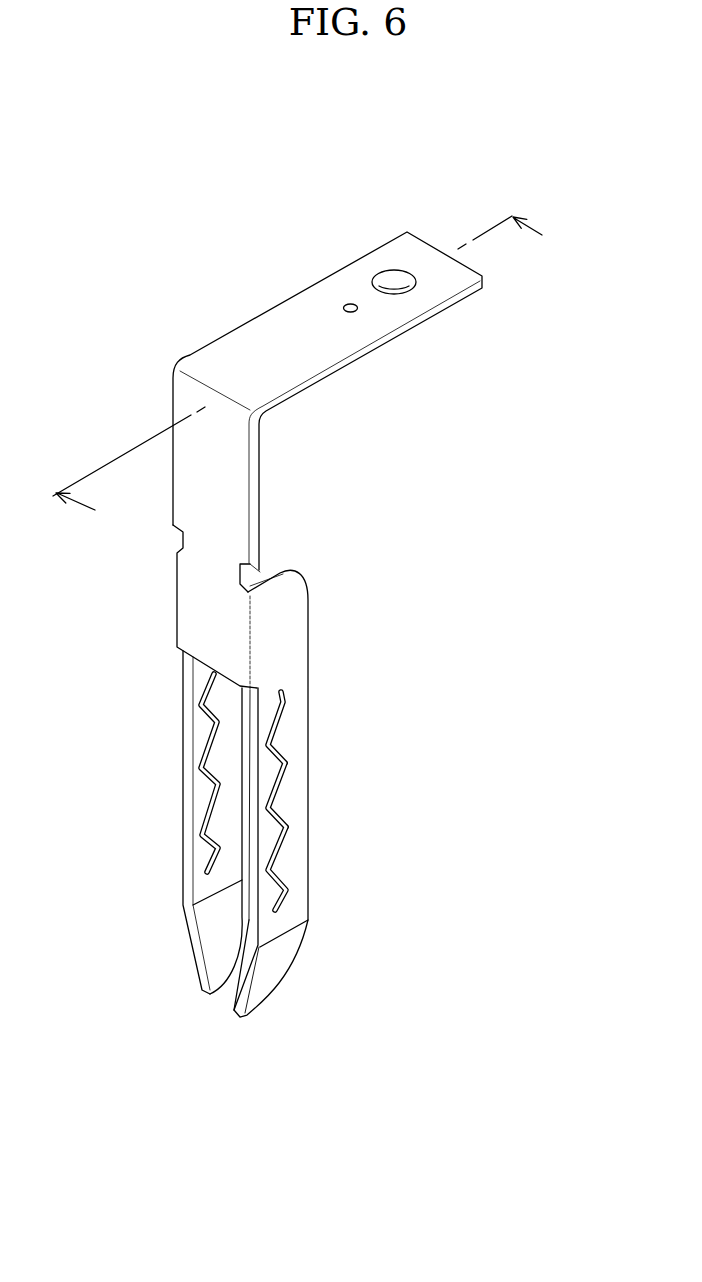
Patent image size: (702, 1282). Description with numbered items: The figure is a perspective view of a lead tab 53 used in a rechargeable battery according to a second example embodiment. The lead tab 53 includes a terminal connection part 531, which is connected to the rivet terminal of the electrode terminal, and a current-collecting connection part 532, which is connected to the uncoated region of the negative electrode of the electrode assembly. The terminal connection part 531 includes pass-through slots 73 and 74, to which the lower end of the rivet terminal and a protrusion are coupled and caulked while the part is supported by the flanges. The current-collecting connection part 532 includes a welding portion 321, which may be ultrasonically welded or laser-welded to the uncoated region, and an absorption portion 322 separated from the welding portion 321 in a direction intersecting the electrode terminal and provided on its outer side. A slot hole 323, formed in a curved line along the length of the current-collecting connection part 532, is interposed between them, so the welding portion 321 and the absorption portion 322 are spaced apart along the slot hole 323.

The lead tab 53 is at (287, 147).
The terminal connection part 531 is at (248, 312).
The current-collecting connection part 532 is at (152, 748).
The pass-through slot 73 is at (390, 277).
The pass-through slot 74 is at (350, 304).
The welding portion 321 is at (297, 717).
The absorption portion 322 is at (267, 778).
The slot hole 323 is at (282, 843).